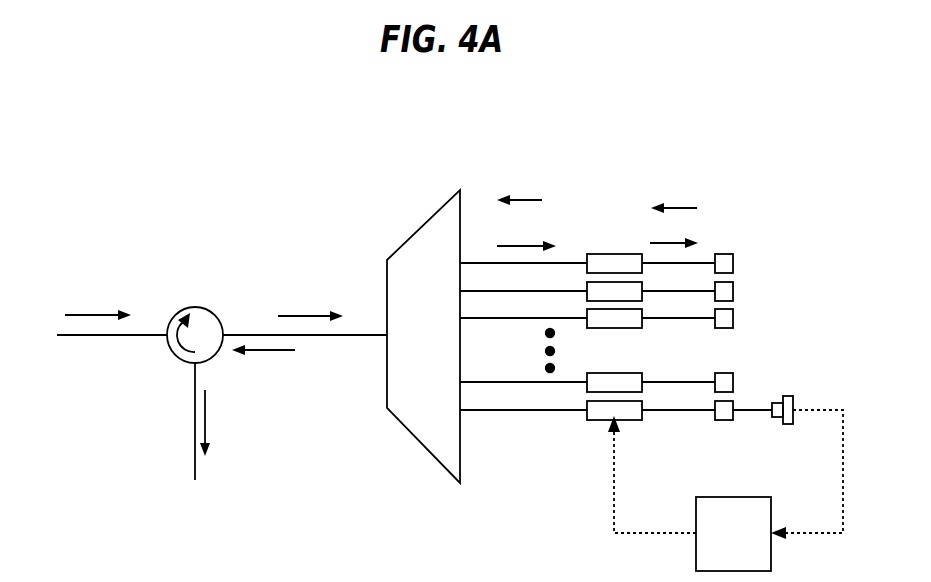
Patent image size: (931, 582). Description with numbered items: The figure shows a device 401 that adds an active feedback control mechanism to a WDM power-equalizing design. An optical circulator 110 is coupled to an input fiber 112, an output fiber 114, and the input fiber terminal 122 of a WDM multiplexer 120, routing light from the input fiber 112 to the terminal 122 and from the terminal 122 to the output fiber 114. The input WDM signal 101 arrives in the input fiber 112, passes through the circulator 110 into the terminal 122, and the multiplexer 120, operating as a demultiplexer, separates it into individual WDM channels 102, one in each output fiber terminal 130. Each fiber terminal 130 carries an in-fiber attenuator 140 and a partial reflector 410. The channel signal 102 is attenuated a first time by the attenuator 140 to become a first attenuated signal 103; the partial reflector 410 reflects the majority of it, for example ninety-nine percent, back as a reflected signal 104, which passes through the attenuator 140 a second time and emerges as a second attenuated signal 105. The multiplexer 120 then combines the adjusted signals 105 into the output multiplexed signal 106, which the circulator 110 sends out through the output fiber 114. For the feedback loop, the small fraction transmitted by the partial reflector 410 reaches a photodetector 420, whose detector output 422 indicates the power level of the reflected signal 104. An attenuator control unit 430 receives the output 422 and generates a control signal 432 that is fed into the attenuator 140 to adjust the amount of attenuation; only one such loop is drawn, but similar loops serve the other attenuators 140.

The device 401 is at (379, 137).
The WDM signal 101 is at (95, 313).
The individual WDM channel 102 is at (533, 245).
The first attenuated signal 103 is at (682, 243).
The reflected signal 104 is at (679, 208).
The second attenuated signal 105 is at (530, 200).
The output multiplexed signal 106 is at (272, 352).
The optical circulator 110 is at (195, 307).
The input fiber 112 is at (118, 336).
The output fiber 114 is at (194, 416).
The WDM multiplexer 120 is at (420, 445).
The input fiber terminal 122 is at (372, 338).
The output fiber terminal 130 is at (523, 410).
The in-fiber attenuator 140 is at (597, 420).
The partial reflector 410 is at (722, 420).
The photodetector 420 is at (786, 396).
The detector output 422 is at (845, 473).
The attenuator control unit 430 is at (752, 549).
The control signal 432 is at (612, 493).